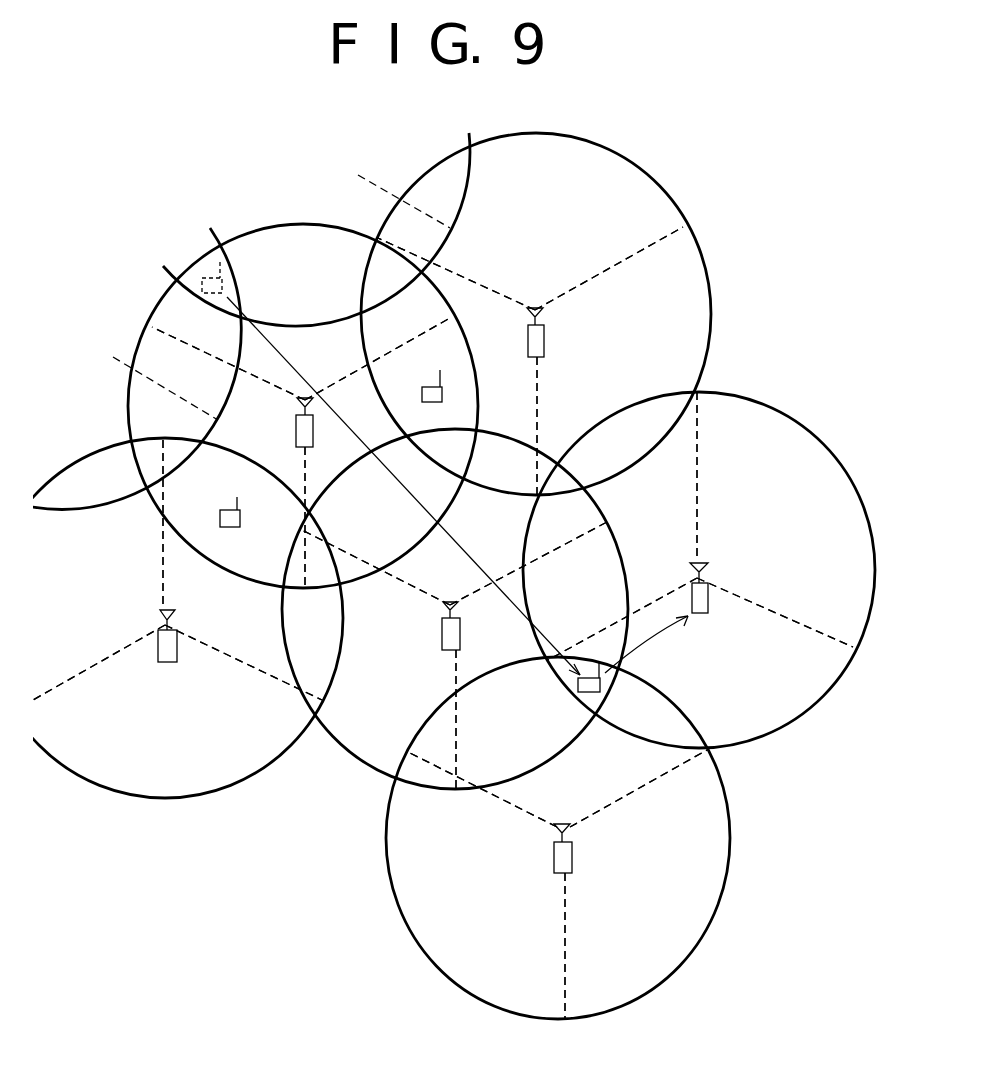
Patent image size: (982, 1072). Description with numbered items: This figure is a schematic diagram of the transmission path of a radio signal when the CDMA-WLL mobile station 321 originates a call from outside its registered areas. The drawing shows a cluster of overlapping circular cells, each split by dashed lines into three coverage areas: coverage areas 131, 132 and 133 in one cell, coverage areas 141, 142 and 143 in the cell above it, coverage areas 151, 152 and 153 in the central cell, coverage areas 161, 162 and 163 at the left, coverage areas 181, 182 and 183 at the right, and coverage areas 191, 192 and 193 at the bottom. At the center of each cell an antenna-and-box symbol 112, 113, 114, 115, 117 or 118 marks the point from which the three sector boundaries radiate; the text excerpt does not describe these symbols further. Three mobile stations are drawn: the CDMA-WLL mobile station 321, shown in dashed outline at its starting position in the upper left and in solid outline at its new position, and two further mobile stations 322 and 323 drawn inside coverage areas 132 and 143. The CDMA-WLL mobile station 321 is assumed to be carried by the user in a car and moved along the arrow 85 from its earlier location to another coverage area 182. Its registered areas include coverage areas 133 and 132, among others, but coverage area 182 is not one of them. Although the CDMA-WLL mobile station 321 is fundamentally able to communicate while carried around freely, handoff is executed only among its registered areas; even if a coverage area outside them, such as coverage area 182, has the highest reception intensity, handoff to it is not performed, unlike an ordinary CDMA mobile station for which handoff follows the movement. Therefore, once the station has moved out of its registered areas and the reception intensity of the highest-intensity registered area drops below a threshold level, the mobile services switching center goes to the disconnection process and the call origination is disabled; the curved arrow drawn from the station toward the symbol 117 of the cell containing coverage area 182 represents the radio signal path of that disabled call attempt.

The arrow 85 is at (480, 570).
The base station of cell 13 112 is at (313, 432).
The base station of cell 14 113 is at (544, 335).
The base station of cell 15 114 is at (442, 632).
The base station of cell 16 115 is at (158, 652).
The base station of cell 18 117 is at (708, 588).
The base station of cell 19 118 is at (572, 848).
The CDMA-WLL mobile station 321 is at (205, 295).
The mobile station 322 is at (232, 510).
The mobile station 323 is at (442, 395).
The coverage area 131 is at (377, 453).
The coverage area 132 is at (228, 457).
The coverage area 133 is at (301, 359).
The coverage area 141 is at (530, 259).
The coverage area 142 is at (609, 361).
The coverage area 143 is at (457, 366).
The coverage area 151 is at (454, 560).
The coverage area 152 is at (528, 655).
The coverage area 153 is at (379, 659).
The coverage area 161 is at (242, 570).
The coverage area 162 is at (177, 682).
The coverage area 163 is at (99, 570).
The sector 1 of cell 18 181 is at (775, 519).
The coverage area 182 is at (700, 631).
The sector 3 of cell 18 183 is at (622, 526).
The sector 1 of cell 19 191 is at (558, 788).
The sector 2 of cell 19 192 is at (636, 884).
The sector 3 of cell 19 193 is at (487, 885).